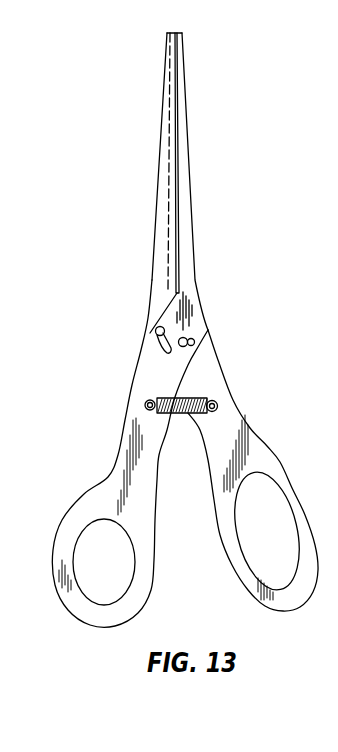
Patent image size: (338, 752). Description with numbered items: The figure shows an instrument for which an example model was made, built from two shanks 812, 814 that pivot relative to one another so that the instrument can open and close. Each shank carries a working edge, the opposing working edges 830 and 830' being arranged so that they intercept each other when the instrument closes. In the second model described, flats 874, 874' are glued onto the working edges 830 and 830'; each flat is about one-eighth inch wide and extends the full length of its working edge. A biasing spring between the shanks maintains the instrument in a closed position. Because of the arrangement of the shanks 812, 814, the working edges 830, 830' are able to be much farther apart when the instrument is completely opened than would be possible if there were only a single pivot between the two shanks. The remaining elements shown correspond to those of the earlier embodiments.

The shank 812 is at (122, 470).
The shank 814 is at (257, 443).
The working edge 830 is at (205, 128).
The working edge 830' is at (144, 74).
The flat 874 is at (210, 181).
The flat 874' is at (132, 183).